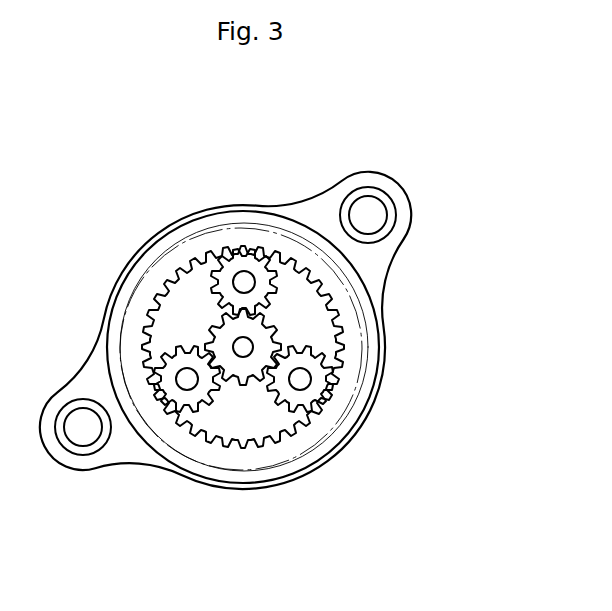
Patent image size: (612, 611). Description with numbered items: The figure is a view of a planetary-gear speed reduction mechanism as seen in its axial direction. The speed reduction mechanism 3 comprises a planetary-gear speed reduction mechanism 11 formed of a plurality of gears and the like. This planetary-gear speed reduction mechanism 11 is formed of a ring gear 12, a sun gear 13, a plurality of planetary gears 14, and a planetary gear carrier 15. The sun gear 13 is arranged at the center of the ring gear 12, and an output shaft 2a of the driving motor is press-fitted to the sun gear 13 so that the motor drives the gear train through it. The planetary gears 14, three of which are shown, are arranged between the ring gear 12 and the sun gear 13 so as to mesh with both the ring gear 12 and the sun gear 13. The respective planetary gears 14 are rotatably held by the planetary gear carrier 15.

The speed reduction mechanism 3 is at (225, 299).
The planetary-gear speed reduction mechanism 11 is at (188, 199).
The ring gear 12 is at (117, 301).
The sun gear 13 is at (241, 388).
The planetary gears 14 is at (244, 252).
The planetary gear carrier 15 is at (277, 223).
The output shaft 2a is at (253, 342).